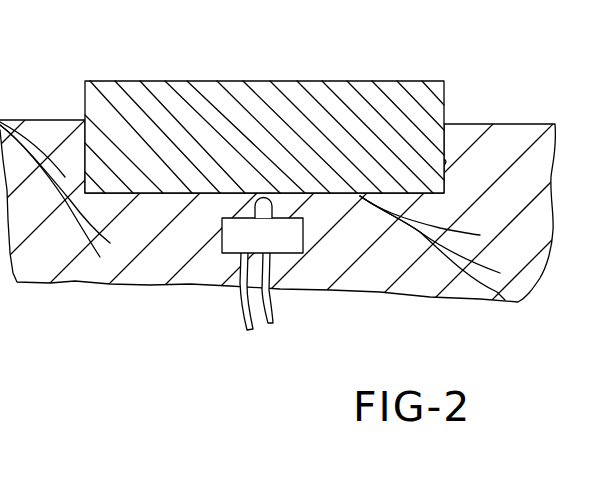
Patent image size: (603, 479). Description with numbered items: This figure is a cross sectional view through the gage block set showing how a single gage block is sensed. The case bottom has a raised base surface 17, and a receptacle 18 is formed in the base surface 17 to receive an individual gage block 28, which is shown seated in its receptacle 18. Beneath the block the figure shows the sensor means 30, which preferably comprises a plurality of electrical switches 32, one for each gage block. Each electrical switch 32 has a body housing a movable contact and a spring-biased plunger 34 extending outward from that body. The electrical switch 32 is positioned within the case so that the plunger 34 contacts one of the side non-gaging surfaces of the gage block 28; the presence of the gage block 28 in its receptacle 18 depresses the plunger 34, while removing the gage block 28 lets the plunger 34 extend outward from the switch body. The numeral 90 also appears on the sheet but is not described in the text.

The base surface 17 is at (37, 118).
The receptacle 18 is at (547, 167).
The gage block 28 is at (219, 81).
The sensor means 30 is at (185, 252).
The electrical switch 32 is at (232, 238).
The spring-biased plunger 34 is at (272, 211).
The connecting element 90 is at (0, 448).